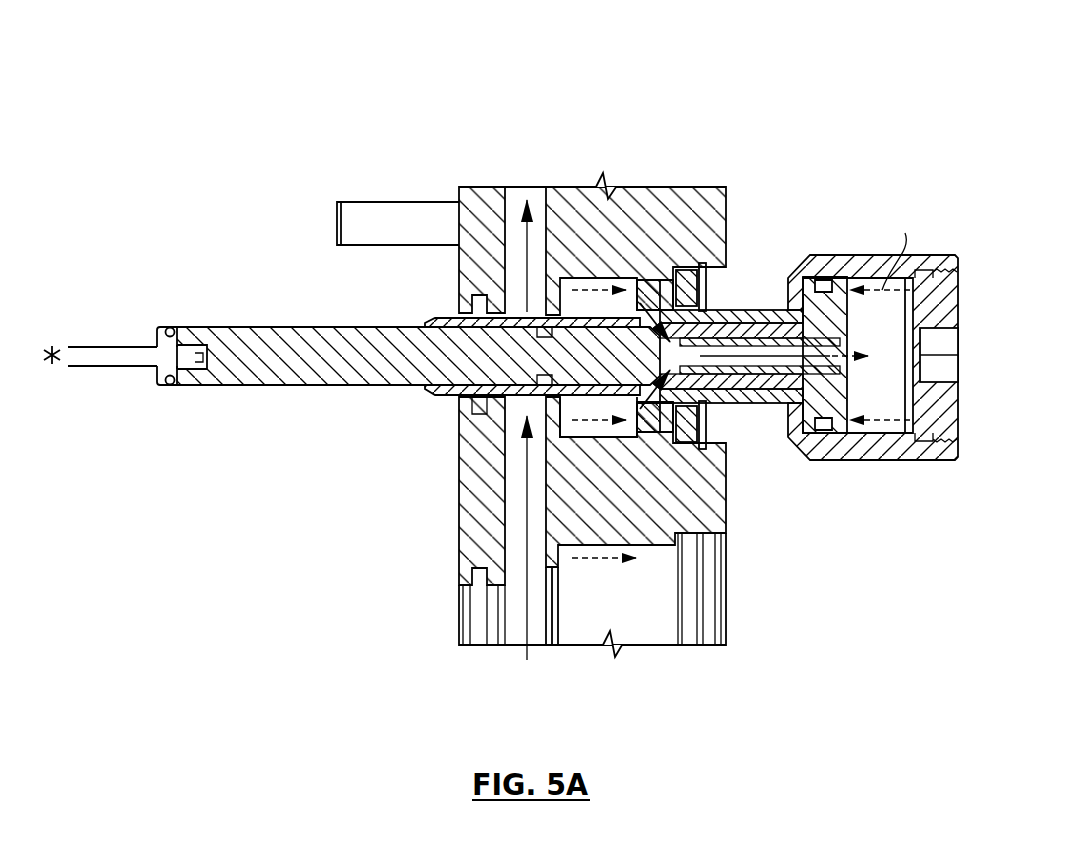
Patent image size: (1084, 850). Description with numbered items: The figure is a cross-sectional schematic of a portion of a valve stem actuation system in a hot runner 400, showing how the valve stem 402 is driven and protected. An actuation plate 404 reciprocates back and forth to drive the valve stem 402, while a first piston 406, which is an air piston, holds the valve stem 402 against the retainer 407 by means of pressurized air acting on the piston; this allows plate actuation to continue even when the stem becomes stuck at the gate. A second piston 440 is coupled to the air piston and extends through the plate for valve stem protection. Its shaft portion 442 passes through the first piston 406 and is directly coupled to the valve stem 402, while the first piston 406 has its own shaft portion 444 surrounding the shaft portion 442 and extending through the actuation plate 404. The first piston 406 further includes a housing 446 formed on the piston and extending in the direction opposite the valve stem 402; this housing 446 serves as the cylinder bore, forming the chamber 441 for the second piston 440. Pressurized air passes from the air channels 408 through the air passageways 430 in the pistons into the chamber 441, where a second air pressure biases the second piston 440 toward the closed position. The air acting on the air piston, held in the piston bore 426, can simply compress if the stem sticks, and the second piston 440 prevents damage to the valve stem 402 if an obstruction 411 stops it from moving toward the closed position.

The hot runner 400 is at (634, 72).
The valve stem 402 is at (112, 355).
The actuation plate 404 is at (577, 200).
The first piston 406 is at (661, 300).
The retainer 407 is at (727, 268).
The air channels 408 is at (516, 460).
The obstruction 411 is at (56, 347).
The piston bore 426 is at (587, 432).
The air passageways 430 is at (700, 418).
The second piston 440 is at (830, 312).
The chamber 441 is at (877, 388).
The shaft portion 442 is at (752, 322).
The shaft portion 444 is at (448, 316).
The housing 446 is at (733, 320).